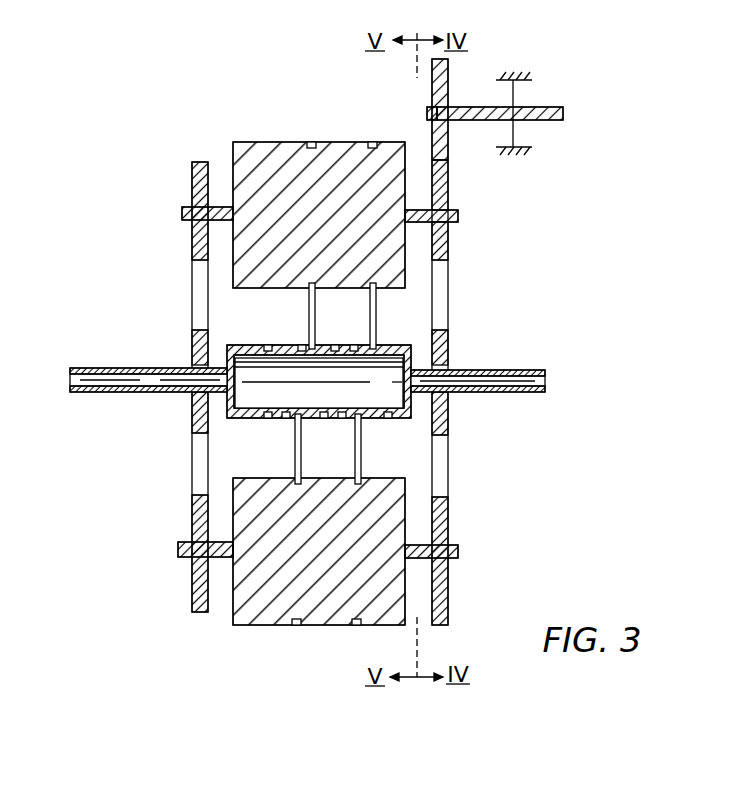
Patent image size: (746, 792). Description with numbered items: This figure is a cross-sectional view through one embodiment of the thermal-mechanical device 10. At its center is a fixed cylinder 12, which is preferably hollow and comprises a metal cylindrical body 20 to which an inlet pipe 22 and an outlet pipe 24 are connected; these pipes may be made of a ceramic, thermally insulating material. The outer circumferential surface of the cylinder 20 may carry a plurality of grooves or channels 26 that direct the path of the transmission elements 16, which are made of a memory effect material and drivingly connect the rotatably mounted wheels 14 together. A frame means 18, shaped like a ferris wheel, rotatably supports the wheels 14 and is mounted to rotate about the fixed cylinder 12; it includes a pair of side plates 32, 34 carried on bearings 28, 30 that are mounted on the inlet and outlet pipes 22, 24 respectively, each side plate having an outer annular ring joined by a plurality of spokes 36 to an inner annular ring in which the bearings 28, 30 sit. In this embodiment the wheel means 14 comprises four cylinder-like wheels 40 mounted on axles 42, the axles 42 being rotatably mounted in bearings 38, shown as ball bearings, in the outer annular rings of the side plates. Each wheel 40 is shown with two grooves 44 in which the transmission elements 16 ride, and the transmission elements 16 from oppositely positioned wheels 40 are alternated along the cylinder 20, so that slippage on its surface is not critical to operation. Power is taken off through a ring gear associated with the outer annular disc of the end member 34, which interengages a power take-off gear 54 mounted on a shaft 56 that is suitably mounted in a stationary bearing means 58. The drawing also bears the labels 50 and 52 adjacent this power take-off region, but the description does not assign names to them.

The thermal-mechanical device 10 is at (160, 149).
The fixed cylinder 12 is at (392, 331).
The wheels 14 is at (292, 138).
The transmission elements 16 is at (282, 343).
The frame means 18 is at (448, 244).
The metal cylindrical body 20 is at (250, 422).
The inlet pipe 22 is at (150, 390).
The outlet pipe 24 is at (490, 396).
The grooves or channels 26 is at (286, 422).
The bearing 28 is at (192, 356).
The bearing 30 is at (448, 353).
The side plate 32 is at (192, 330).
The side plate 34 is at (448, 334).
The spokes 36 is at (445, 297).
The bearings 38 is at (194, 232).
The cylinder-like wheels 40 is at (385, 158).
The axles 42 is at (460, 216).
The grooves 44 is at (372, 138).
The lever 50 is at (462, 84).
The pivot block 52 is at (448, 160).
The power take-off gear 54 is at (448, 126).
The shaft 56 is at (548, 108).
The stationary bearing means 58 is at (525, 80).